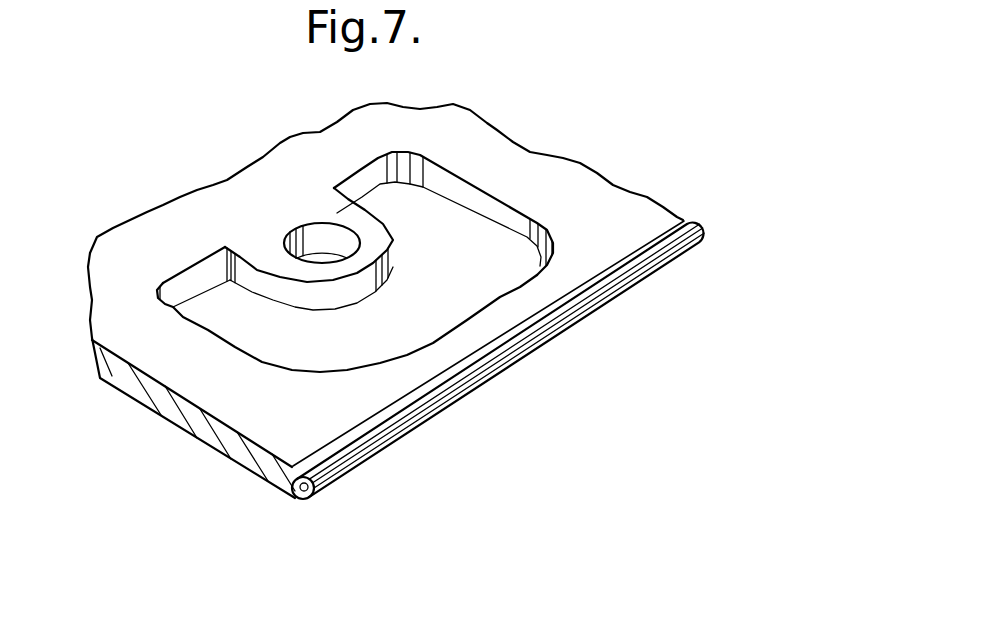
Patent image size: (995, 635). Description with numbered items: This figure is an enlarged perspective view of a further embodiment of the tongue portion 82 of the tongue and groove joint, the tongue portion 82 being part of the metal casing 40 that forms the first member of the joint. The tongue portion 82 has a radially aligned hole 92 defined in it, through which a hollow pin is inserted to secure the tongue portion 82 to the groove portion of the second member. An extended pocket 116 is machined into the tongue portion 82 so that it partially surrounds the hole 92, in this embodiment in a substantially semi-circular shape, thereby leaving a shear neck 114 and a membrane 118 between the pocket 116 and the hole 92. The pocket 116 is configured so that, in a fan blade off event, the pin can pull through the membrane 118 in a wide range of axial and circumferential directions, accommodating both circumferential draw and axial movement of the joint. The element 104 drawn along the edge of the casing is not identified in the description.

The metal casing 40 is at (498, 95).
The tongue portion 82 is at (538, 168).
The hole 92 is at (310, 236).
The pin 104 is at (533, 300).
The shear neck 114 is at (383, 253).
The extended pocket 116 is at (421, 342).
The membrane 118 is at (512, 262).